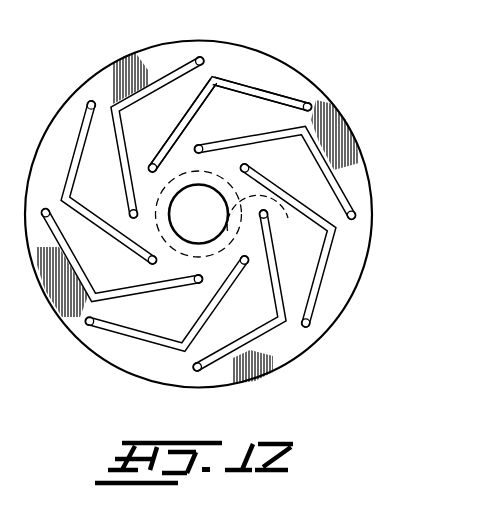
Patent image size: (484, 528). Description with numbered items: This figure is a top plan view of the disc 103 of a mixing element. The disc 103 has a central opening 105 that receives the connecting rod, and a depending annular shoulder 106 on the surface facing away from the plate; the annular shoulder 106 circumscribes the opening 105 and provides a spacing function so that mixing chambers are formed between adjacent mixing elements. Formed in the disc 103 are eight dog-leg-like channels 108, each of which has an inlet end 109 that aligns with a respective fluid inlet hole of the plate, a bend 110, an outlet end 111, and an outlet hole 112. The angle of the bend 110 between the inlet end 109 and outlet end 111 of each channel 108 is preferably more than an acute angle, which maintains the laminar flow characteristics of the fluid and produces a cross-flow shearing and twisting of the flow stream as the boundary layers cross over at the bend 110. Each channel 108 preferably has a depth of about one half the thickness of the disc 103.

The disc 103 is at (368, 193).
The central opening 105 is at (203, 192).
The annular shoulder 106 is at (269, 215).
The dog-leg-like channel 108 is at (271, 89).
The inlet end 109 is at (316, 101).
The bend 110 is at (213, 77).
The outlet end 111 is at (151, 162).
The outlet hole 112 is at (150, 168).